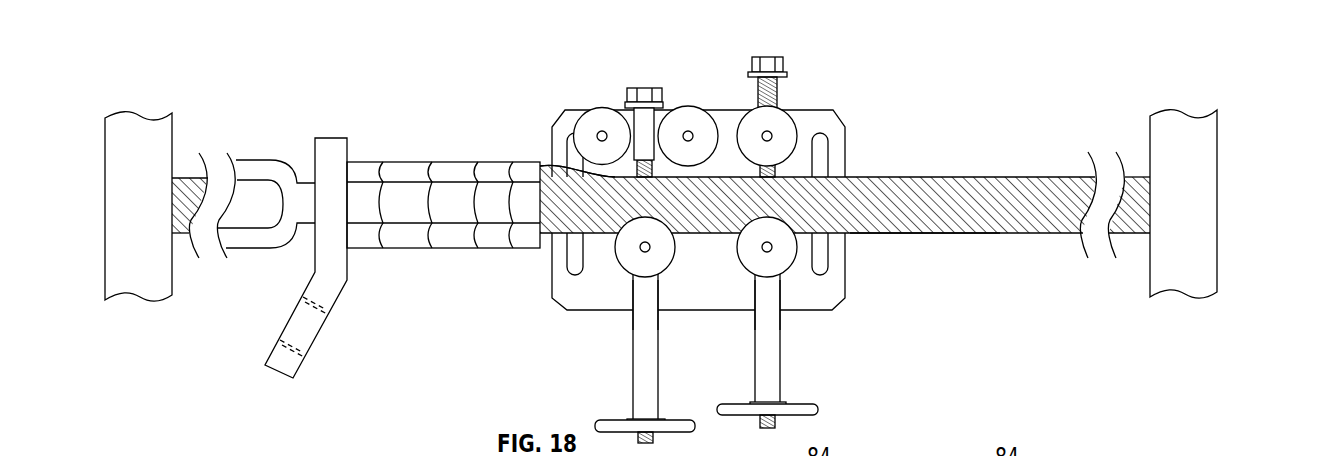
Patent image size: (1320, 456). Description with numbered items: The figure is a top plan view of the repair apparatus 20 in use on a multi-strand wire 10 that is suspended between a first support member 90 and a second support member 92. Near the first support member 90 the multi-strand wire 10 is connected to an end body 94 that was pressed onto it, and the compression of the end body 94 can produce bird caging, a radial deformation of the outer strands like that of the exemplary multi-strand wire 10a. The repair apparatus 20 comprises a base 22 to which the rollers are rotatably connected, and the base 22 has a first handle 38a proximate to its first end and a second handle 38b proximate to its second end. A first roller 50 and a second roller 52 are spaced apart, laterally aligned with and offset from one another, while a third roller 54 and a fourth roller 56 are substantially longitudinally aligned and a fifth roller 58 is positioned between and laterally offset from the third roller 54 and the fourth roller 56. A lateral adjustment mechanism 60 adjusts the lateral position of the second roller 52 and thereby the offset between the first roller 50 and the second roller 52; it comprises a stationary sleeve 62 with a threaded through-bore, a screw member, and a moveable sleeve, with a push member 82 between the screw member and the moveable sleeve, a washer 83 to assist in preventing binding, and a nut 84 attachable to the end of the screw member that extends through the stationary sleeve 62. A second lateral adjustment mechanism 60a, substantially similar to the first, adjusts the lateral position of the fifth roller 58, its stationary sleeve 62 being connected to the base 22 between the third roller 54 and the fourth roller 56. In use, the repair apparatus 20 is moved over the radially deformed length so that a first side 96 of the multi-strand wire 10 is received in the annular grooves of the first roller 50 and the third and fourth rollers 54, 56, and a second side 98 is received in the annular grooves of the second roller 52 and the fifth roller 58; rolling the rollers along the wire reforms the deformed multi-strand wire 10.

The multi-strand wire 10 is at (801, 193).
The multi-strand wire having bird cage defect 10a is at (571, 156).
The repair apparatus 20 is at (576, 106).
The base 22 is at (843, 128).
The first handle 38a is at (563, 124).
The second handle 38b is at (827, 152).
The first roller 50 is at (785, 133).
The second roller 52 is at (745, 268).
The third roller 54 is at (598, 120).
The fourth roller 56 is at (692, 118).
The fifth roller 58 is at (675, 243).
The lateral adjustment mechanism 60 is at (780, 320).
The second lateral adjustment mechanism 60a is at (633, 340).
The stationary sleeve 62 is at (662, 120).
The push member 82 is at (658, 367).
The washer 83 is at (790, 403).
The nut 84 is at (645, 87).
The first support member 90 is at (105, 205).
The second support member 92 is at (1218, 205).
The end body 94 is at (463, 162).
The first side of the multi-strand wire 96 is at (1015, 178).
The second side of the multi-strand wire 98 is at (897, 233).